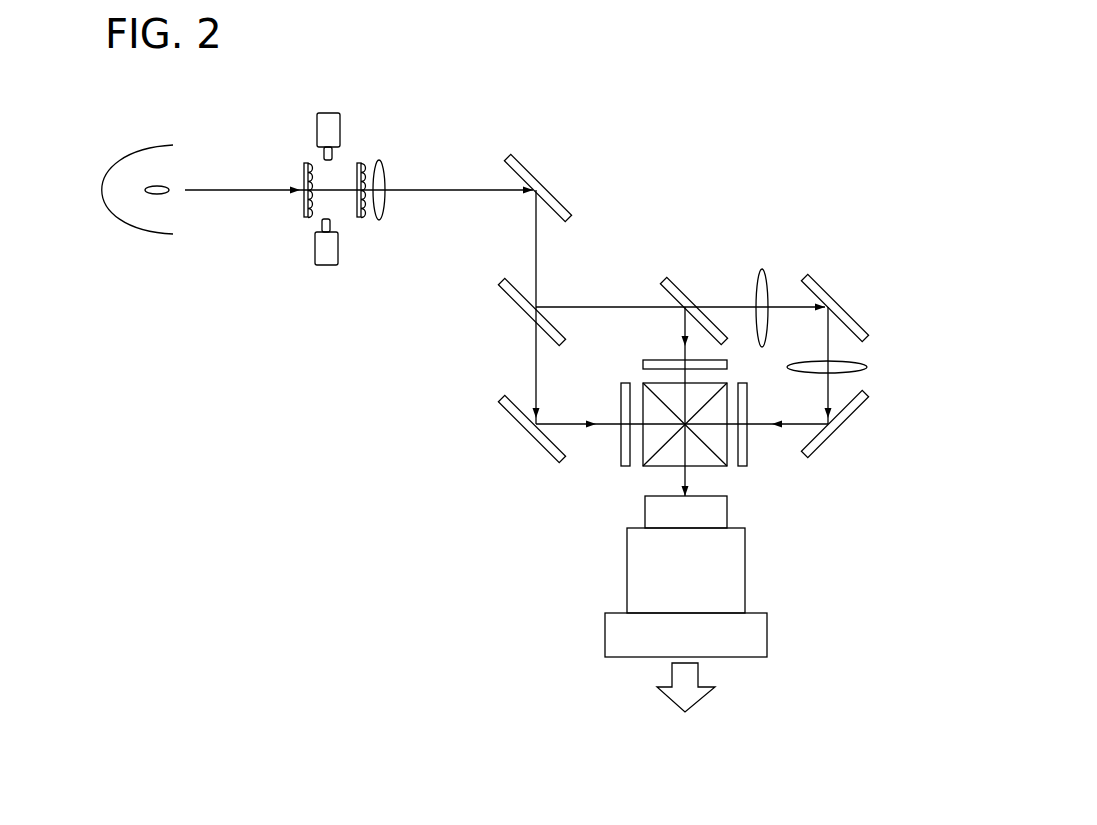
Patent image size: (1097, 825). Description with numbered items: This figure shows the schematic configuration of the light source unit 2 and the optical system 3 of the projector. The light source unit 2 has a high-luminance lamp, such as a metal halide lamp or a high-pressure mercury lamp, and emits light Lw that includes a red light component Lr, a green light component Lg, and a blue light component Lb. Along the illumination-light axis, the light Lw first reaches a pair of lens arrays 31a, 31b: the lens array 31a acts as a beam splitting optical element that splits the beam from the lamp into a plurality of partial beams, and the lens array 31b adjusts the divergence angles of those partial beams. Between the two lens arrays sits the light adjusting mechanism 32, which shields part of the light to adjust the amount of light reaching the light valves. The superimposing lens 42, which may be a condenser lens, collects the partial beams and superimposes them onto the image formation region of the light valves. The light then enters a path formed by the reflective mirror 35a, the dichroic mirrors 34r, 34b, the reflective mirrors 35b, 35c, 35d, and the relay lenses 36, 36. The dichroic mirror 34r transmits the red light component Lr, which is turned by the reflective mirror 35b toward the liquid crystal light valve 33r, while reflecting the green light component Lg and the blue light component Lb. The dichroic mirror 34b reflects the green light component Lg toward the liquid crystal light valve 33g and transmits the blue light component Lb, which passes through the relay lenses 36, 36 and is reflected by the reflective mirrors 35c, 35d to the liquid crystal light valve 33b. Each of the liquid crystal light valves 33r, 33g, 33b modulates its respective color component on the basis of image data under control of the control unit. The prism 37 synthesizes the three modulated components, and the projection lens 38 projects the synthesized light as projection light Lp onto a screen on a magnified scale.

The light source unit 2 is at (120, 231).
The optical system 3 is at (723, 136).
The lens array 31a is at (304, 212).
The lens array 31b is at (360, 218).
The light adjusting mechanism 32 is at (354, 128).
The liquid crystal light valve 33b is at (748, 460).
The liquid crystal light valve 33g is at (643, 364).
The liquid crystal light valve 33r is at (621, 456).
The dichroic mirror 34b is at (681, 290).
The dichroic mirror 34r is at (506, 292).
The reflective mirror 35a is at (535, 172).
The reflective mirror 35b is at (538, 446).
The reflective mirror 35c is at (830, 284).
The reflective mirror 35d is at (820, 455).
The relay lens 36 is at (768, 278).
The prism 37 is at (656, 470).
The projection lens 38 is at (640, 570).
The superimposing lens 42 is at (382, 165).
The light Lw is at (224, 184).
The red light component Lr is at (528, 372).
The green light component Lg is at (677, 327).
The blue light component Lb is at (726, 300).
The projection light Lp is at (680, 676).